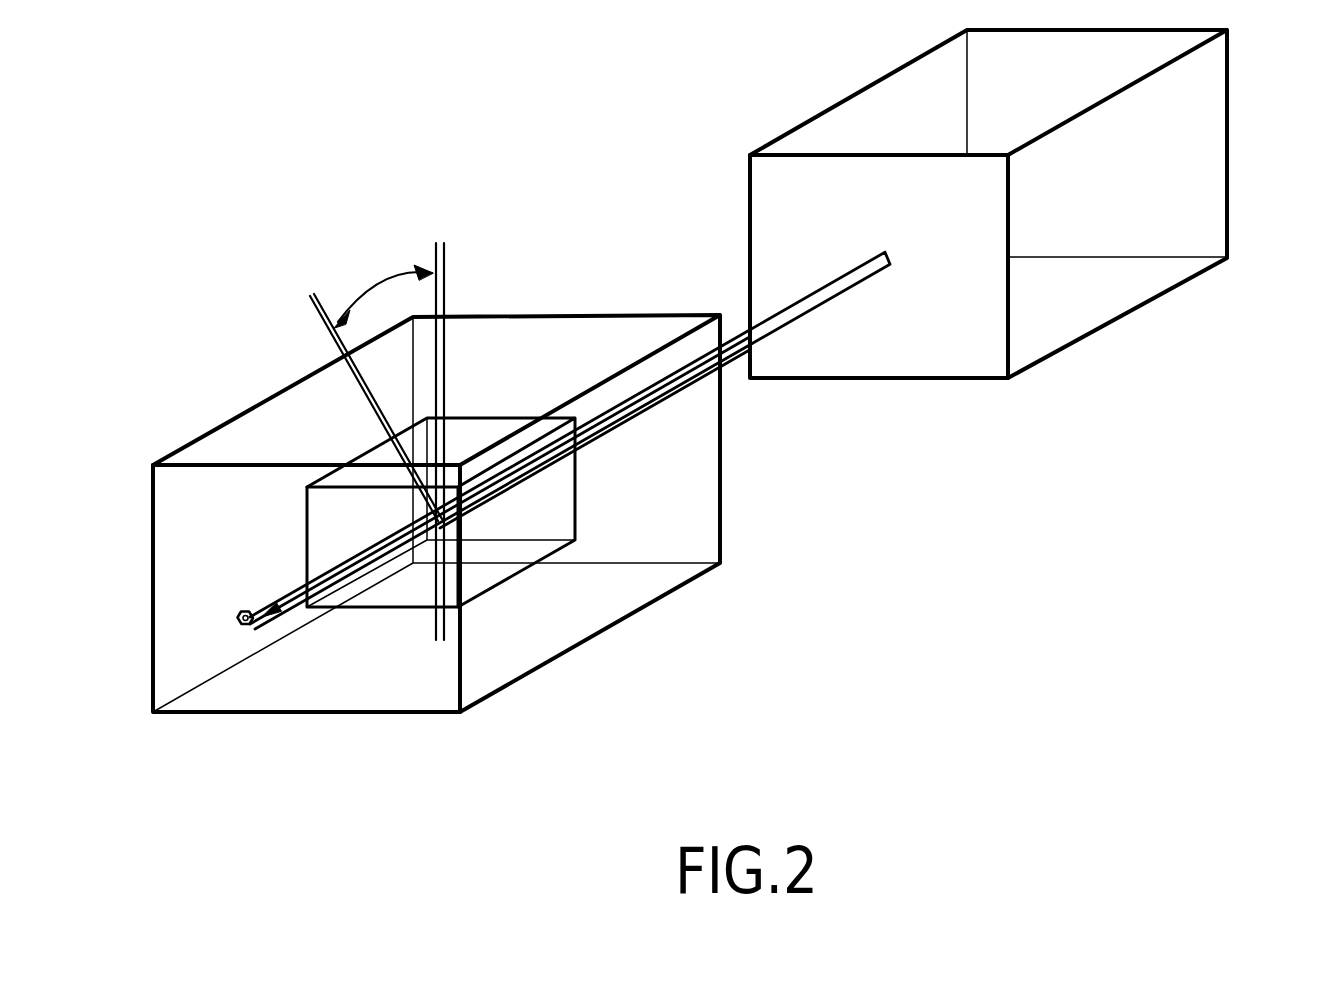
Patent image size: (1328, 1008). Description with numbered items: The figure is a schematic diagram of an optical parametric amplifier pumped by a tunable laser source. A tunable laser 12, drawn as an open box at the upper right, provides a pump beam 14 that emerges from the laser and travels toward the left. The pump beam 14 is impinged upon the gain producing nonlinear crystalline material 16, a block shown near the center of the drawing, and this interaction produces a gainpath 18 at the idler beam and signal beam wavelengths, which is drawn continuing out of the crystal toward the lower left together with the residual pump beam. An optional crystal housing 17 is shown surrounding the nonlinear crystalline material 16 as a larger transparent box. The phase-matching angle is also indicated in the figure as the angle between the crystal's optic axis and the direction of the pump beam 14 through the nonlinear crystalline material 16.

The tunable laser 12 is at (1110, 323).
The pump beam 14 is at (830, 285).
The nonlinear crystalline material 16 is at (557, 500).
The optional crystal housing 17 is at (595, 637).
The gainpath 18 is at (284, 616).